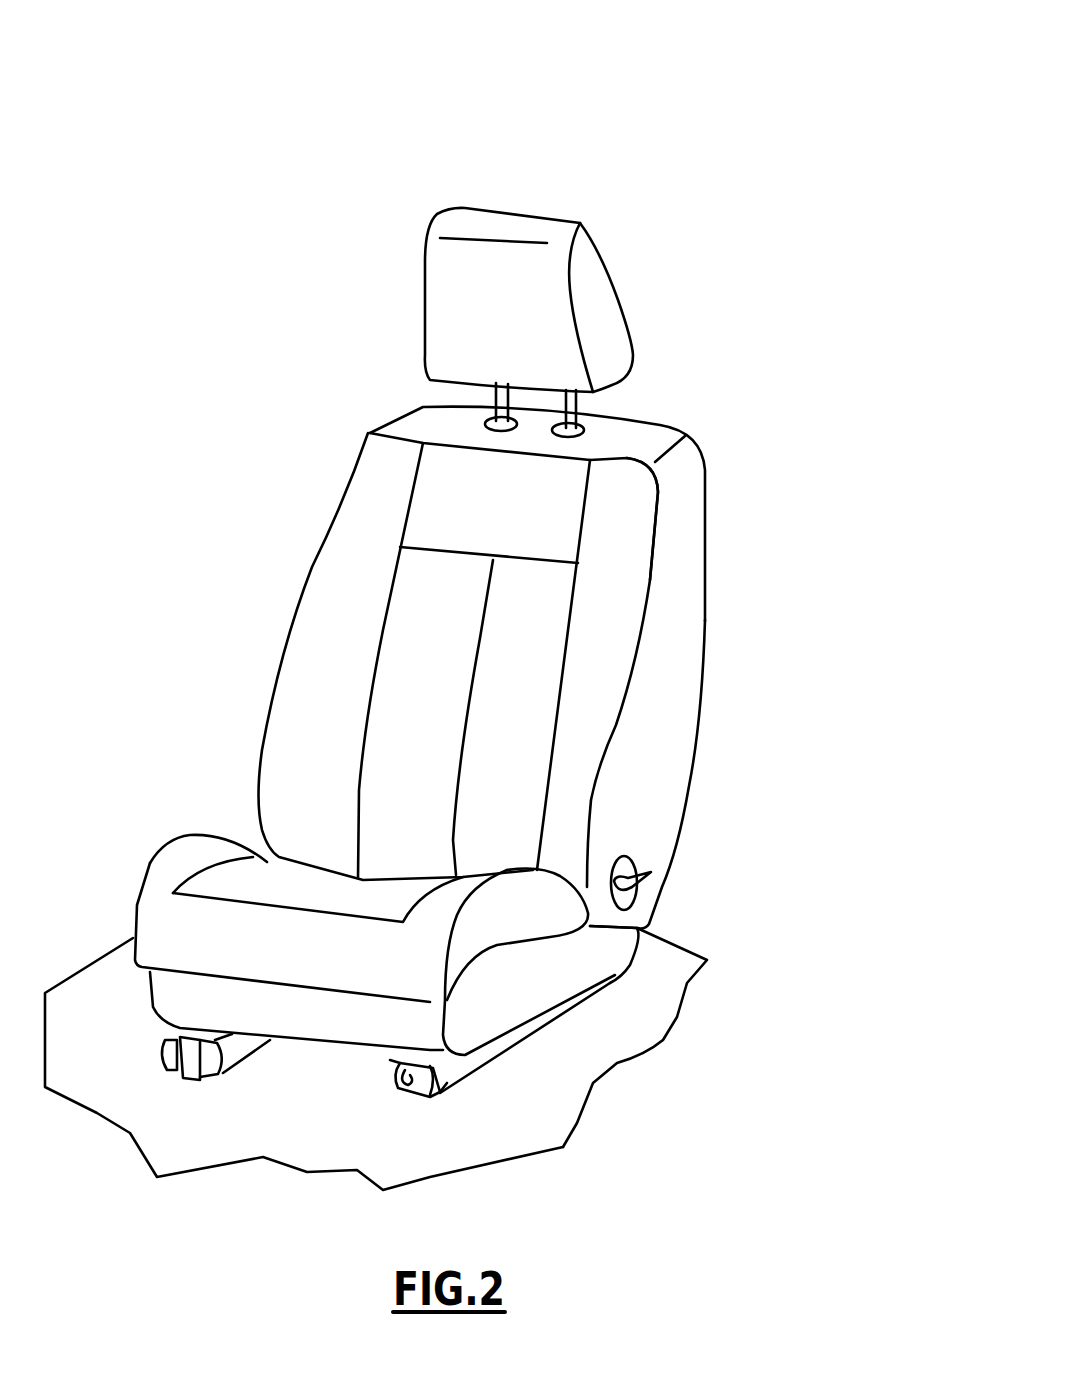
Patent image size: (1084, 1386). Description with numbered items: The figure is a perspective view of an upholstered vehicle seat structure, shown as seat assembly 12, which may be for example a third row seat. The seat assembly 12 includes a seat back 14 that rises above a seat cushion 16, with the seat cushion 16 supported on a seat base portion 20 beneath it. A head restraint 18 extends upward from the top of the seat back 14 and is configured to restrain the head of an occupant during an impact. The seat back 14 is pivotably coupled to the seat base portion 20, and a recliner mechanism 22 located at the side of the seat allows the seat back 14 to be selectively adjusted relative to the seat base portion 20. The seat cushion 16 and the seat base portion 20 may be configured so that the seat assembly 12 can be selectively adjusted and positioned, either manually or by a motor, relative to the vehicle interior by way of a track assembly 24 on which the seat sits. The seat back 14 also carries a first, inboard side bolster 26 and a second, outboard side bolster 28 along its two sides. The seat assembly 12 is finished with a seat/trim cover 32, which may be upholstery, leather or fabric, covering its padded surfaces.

The seat assembly 12 is at (453, 587).
The seat back 14 is at (499, 668).
The seat cushion 16 is at (178, 850).
The head restraint 18 is at (605, 325).
The seat base portion 20 is at (565, 965).
The recliner mechanism 22 is at (692, 873).
The track assembly 24 is at (520, 1103).
The first (inboard) side bolster 26 is at (668, 617).
The second (outboard) side bolster 28 is at (303, 678).
The seat/trim cover 32 is at (618, 520).